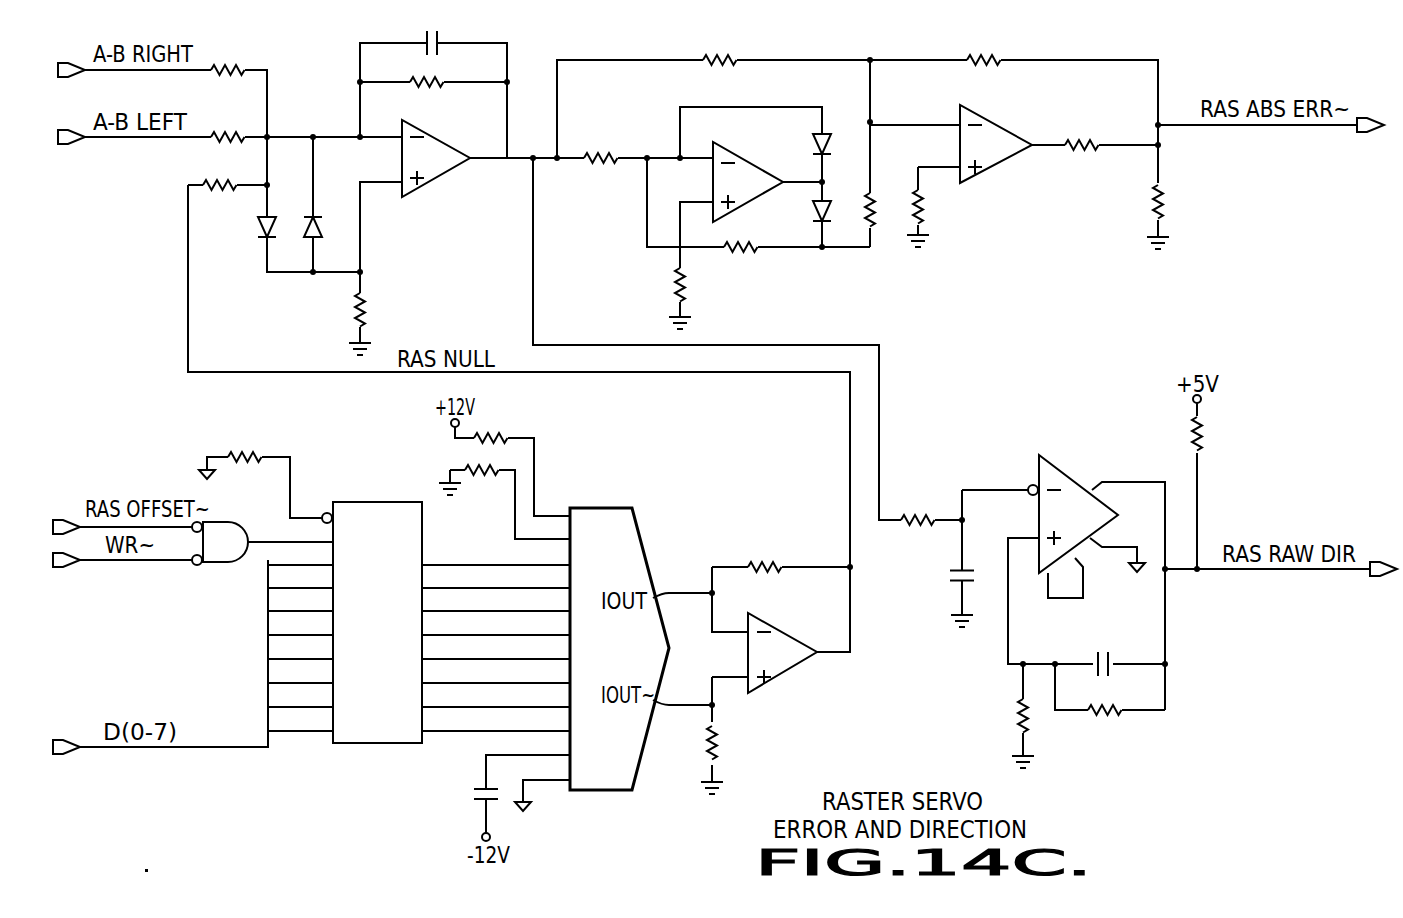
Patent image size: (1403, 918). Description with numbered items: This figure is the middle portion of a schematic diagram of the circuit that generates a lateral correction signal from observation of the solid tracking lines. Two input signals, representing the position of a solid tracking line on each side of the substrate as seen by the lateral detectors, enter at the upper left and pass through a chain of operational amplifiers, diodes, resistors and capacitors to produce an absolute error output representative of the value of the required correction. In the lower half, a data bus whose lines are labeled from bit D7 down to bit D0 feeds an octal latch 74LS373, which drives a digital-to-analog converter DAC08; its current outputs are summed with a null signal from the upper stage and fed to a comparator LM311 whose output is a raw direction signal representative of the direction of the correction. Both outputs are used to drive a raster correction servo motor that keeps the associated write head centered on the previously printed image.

The octal D-type latch 74LS373 is at (377, 608).
The digital-to-analog converter DAC08 is at (619, 635).
The voltage comparator LM311 is at (1076, 498).
The data bus bit 7 line D7 is at (300, 554).
The data bus bit 0 line D0 is at (300, 720).